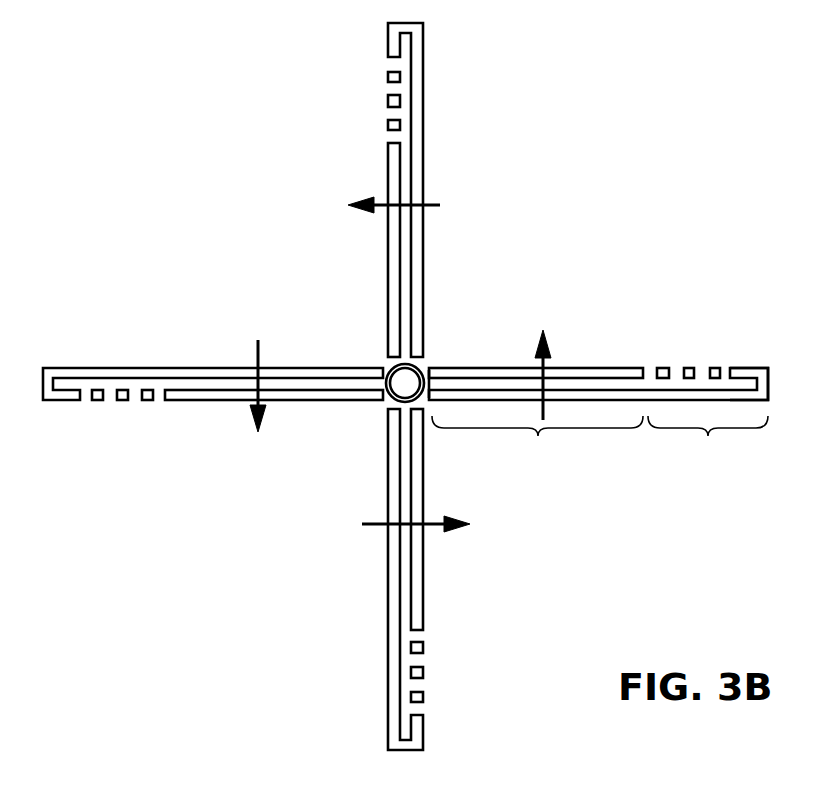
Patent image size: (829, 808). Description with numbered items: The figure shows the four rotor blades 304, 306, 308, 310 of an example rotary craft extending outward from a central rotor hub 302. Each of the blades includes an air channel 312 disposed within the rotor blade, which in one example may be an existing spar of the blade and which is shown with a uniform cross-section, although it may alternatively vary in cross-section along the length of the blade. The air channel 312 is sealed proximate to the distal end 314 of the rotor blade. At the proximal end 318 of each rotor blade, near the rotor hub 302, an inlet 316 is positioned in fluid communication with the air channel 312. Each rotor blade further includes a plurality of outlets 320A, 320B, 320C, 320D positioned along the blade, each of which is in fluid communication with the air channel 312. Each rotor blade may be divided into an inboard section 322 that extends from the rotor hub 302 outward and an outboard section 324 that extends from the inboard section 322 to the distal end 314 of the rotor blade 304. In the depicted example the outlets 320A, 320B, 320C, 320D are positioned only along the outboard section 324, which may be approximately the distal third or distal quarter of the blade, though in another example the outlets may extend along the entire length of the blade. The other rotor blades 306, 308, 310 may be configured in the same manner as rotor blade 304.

The rotor hub 302 is at (386, 369).
The rotor blade 304 is at (629, 377).
The rotor blade 306 is at (378, 558).
The rotor blade 308 is at (205, 353).
The rotor blade 310 is at (378, 96).
The air channel 312 is at (553, 376).
The distal end 314 is at (766, 369).
The inlet 316 is at (434, 383).
The proximal end 318 is at (433, 377).
The outlet 320A is at (651, 367).
The outlet 320B is at (680, 357).
The outlet 320C is at (703, 367).
The outlet 320D is at (727, 367).
The inboard section 322 is at (537, 444).
The outboard section 324 is at (708, 442).